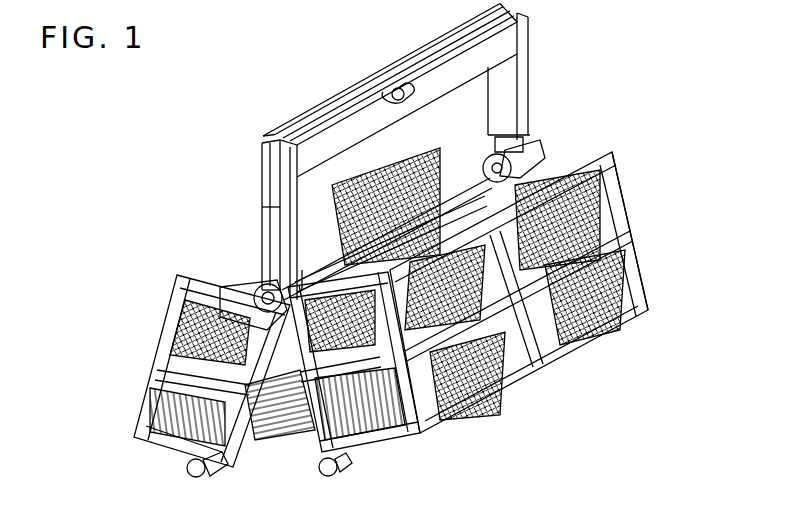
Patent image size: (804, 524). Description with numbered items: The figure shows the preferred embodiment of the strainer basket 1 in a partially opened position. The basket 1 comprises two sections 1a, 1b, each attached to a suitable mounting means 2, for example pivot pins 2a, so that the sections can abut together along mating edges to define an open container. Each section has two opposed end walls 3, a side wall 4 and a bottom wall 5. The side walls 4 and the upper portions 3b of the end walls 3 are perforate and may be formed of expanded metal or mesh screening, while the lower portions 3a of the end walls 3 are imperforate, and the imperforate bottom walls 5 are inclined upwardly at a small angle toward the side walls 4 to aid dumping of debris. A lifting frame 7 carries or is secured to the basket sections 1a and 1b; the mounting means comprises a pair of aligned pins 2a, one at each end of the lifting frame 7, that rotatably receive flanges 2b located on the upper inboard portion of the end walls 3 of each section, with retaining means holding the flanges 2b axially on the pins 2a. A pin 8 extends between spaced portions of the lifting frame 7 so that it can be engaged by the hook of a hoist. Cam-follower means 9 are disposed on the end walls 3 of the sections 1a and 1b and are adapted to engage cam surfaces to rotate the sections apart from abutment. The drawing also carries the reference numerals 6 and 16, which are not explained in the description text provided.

The strainer basket 1 is at (617, 160).
The basket section 1a is at (624, 212).
The basket section 1b is at (140, 414).
The mounting means 2 is at (250, 283).
The pivot pins 2a is at (232, 292).
The flanges 2b is at (243, 295).
The end walls 3 is at (403, 450).
The lower portions of end walls 3a is at (180, 400).
The upper portions of end walls 3b is at (177, 338).
The side wall 4 is at (580, 307).
The bottom wall 5 is at (493, 405).
The cross bar 6 is at (533, 180).
The lifting frame 7 is at (266, 153).
The pin 8 is at (396, 90).
The cam-follower means 9 is at (207, 470).
The mid rail 16 is at (160, 358).